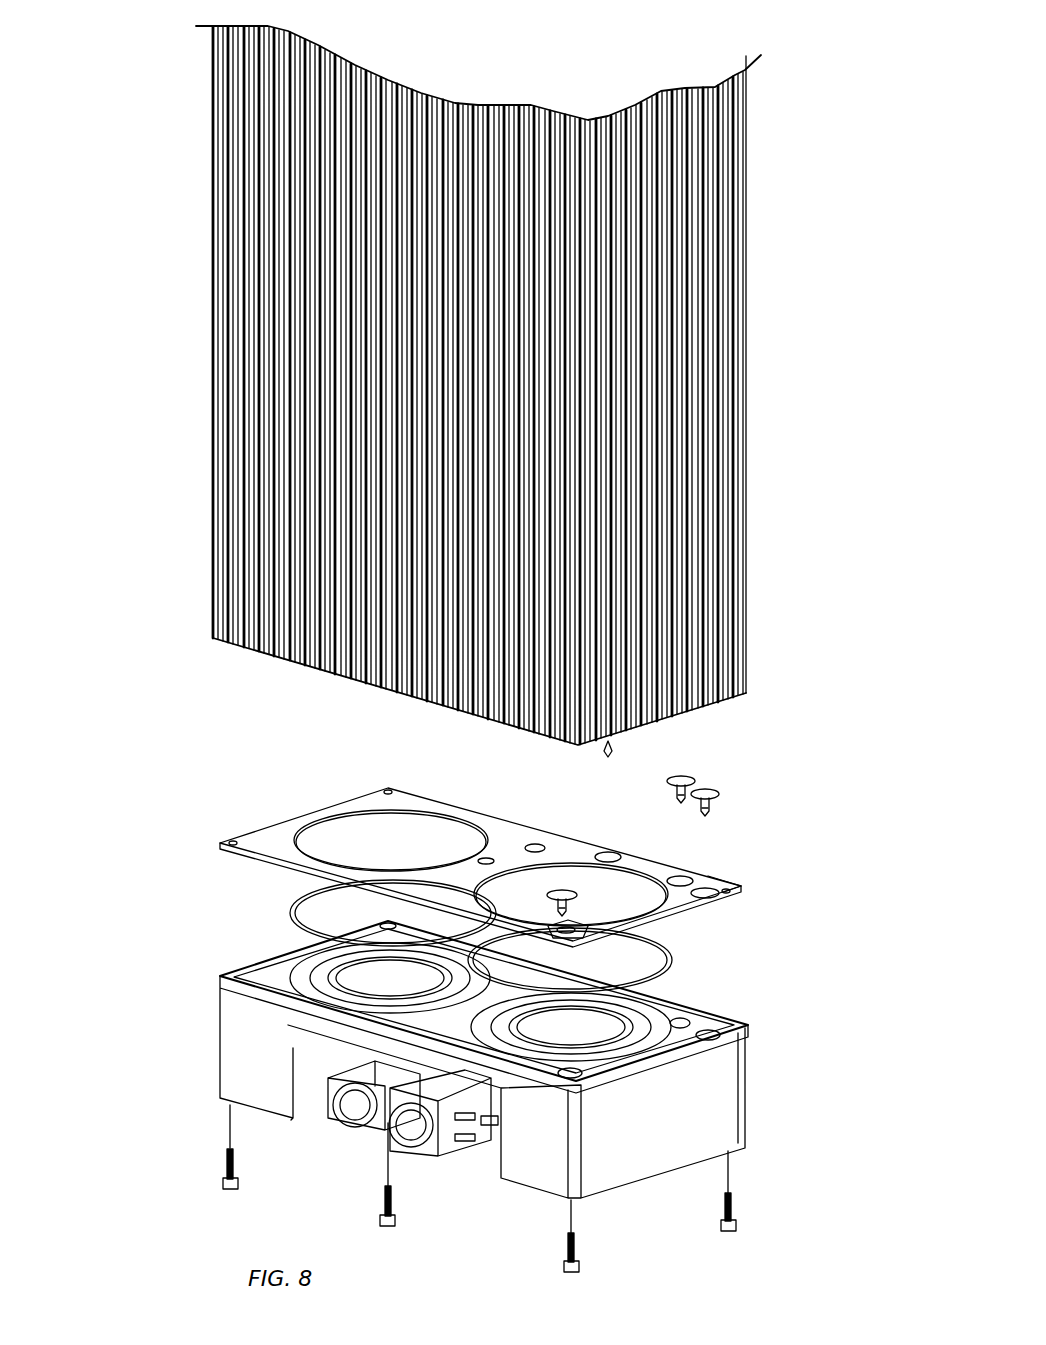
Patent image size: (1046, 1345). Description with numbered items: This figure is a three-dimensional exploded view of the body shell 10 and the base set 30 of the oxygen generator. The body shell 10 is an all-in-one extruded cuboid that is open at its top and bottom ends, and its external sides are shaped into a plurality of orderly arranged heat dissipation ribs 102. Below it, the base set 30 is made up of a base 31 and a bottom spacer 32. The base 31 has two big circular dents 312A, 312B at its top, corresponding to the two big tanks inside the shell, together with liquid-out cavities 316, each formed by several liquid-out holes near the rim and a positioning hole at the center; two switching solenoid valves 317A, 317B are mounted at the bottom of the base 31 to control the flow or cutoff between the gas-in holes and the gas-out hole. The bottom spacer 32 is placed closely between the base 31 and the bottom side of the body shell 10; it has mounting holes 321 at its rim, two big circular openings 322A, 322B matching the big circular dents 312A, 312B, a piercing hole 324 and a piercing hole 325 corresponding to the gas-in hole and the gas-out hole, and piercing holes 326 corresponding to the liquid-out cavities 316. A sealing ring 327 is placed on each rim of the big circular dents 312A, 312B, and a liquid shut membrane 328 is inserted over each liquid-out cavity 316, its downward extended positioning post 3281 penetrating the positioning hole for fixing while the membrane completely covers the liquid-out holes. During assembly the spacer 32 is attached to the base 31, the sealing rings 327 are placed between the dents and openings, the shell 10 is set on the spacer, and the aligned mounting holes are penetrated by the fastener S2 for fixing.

The body shell 10 is at (752, 585).
The heat dissipation ribs 102 is at (725, 638).
The base set 30 is at (122, 790).
The base 31 is at (222, 1003).
The bottom spacer 32 is at (252, 827).
The mounting holes 321 is at (737, 880).
The big circular opening 322A is at (330, 823).
The big circular opening 322B is at (508, 868).
The piercing hole 324 is at (527, 836).
The piercing hole 325 is at (475, 850).
The piercing holes 326 is at (598, 845).
The sealing ring 327 is at (292, 888).
The liquid shut membrane 328 is at (556, 882).
The positioning post 3281 is at (668, 790).
The big circular dent 312A is at (300, 952).
The big circular dent 312B is at (655, 1050).
The liquid-out cavities 316 is at (675, 1008).
The switching solenoid valve 317A is at (328, 1090).
The switching solenoid valve 317B is at (432, 1138).
The fastener S2 is at (572, 1240).